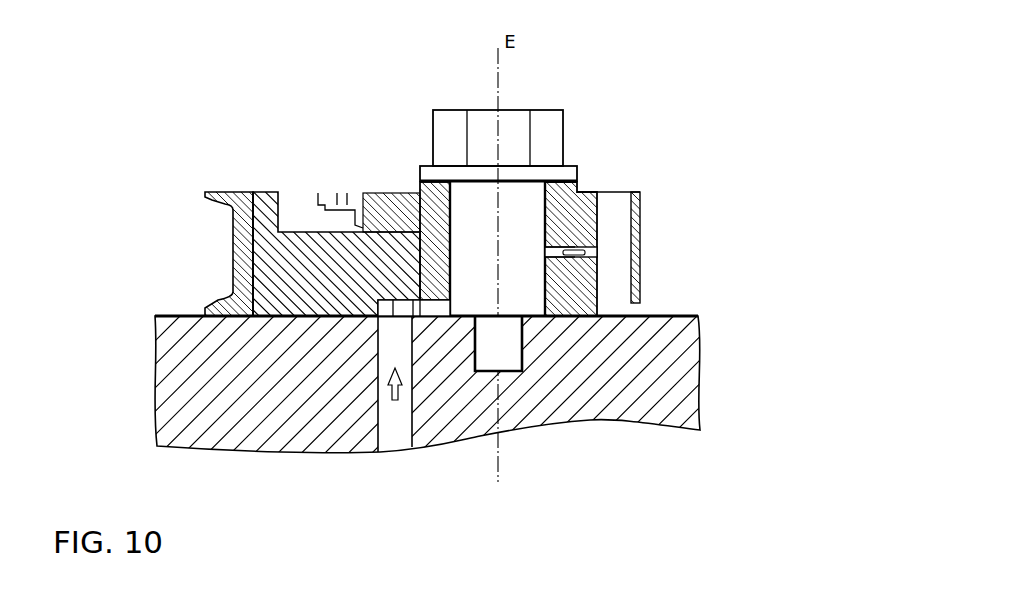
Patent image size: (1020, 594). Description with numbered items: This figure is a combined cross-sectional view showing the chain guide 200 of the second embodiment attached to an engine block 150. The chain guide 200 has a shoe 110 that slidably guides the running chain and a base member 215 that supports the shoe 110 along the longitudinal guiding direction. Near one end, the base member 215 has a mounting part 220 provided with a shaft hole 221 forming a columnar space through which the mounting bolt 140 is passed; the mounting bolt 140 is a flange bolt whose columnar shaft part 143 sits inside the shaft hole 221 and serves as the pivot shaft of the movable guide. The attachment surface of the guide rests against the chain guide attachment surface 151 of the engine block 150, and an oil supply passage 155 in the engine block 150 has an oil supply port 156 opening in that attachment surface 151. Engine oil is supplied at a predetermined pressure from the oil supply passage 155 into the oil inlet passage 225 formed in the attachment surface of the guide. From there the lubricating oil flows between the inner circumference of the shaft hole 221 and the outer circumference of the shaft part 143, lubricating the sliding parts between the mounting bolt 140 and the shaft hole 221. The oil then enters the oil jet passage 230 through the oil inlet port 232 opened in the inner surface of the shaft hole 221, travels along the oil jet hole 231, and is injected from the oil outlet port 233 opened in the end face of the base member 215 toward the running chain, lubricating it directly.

The shoe 110 is at (215, 192).
The mounting bolt 140 is at (537, 102).
The shaft part 143 is at (575, 192).
The engine block 150 is at (683, 368).
The chain guide attachment surface 151 is at (698, 316).
The oil supply passage 155 is at (397, 433).
The oil supply port 156 is at (408, 333).
The chain guide 200 is at (268, 186).
The base member 215 is at (263, 246).
The mounting part 220 is at (420, 193).
The shaft hole 221 is at (450, 213).
The oil inlet passage 225 is at (400, 300).
The oil jet passage 230 is at (578, 246).
The oil jet hole 231 is at (569, 258).
The oil inlet port 232 is at (547, 252).
The oil outlet port 233 is at (600, 247).